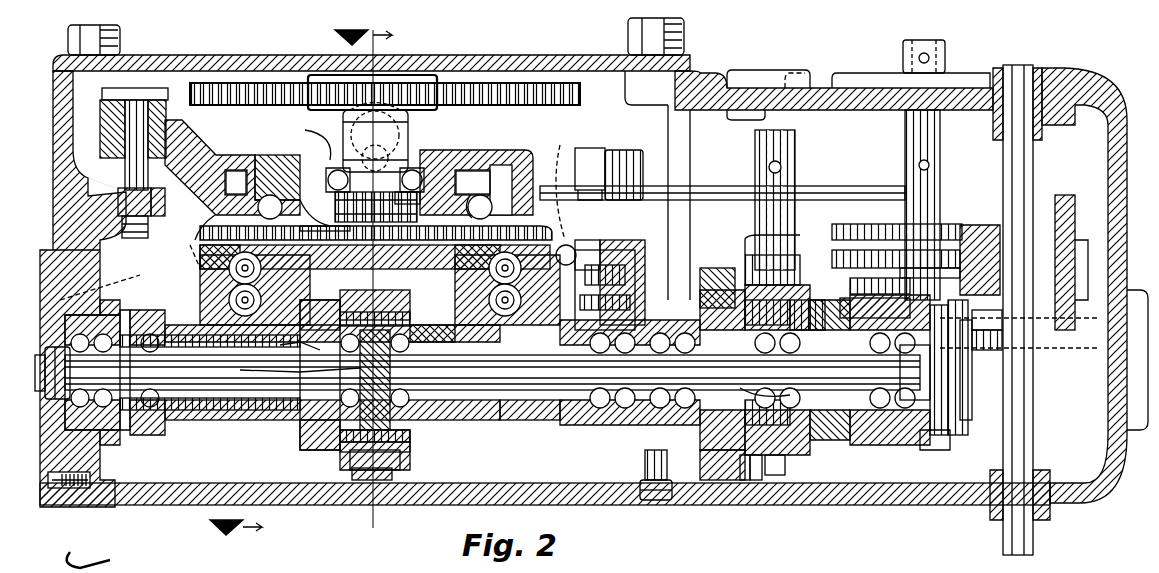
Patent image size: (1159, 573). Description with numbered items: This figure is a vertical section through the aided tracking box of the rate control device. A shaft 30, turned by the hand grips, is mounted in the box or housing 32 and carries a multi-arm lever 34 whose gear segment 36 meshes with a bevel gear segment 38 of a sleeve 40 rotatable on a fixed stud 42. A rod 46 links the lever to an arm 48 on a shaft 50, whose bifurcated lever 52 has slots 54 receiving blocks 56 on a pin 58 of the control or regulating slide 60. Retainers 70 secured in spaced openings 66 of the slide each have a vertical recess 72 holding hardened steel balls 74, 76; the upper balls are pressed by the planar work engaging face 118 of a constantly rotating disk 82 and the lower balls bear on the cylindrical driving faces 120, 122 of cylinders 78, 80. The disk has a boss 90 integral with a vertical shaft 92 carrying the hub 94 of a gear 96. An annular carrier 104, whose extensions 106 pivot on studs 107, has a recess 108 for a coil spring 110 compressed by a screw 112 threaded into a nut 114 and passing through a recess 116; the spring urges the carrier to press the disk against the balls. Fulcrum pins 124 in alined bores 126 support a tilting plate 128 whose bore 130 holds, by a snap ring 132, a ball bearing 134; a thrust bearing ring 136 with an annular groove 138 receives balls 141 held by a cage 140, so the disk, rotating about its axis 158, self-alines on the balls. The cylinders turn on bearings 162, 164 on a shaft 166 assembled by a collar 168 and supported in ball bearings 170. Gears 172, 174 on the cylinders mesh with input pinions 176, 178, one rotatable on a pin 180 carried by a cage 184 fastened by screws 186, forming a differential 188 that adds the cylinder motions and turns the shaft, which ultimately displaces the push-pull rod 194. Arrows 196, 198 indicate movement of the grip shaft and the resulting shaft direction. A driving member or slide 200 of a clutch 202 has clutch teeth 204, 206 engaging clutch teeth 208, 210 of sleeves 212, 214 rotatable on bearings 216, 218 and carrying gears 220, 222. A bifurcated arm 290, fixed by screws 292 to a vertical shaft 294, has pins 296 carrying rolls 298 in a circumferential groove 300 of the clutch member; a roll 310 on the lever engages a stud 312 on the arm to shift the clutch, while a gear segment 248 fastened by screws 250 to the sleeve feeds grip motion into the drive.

The shaft 30 is at (905, 152).
The box or housing 32 is at (1075, 100).
The multi-arm lever 34 is at (945, 230).
The gear segment 36 is at (975, 250).
The bevel gear segment 38 is at (960, 363).
The sleeve 40 is at (985, 352).
The fixed stud 42 is at (995, 335).
The rod 46 is at (845, 186).
The arm 48 is at (635, 155).
The shaft 50 is at (558, 186).
The bifurcated lever 52 is at (610, 275).
The slots 54 is at (600, 250).
The blocks 56 is at (578, 250).
The pin 58 is at (585, 300).
The control or regulating slide 60 is at (375, 256).
The spaced openings 66 is at (315, 236).
The retainers 70 is at (465, 258).
The vertical recess 72 is at (250, 316).
The balls 74 is at (195, 260).
The balls 76 is at (490, 318).
The cylinder 78 is at (215, 420).
The cylinder 80 is at (498, 425).
The disk 82 is at (190, 245).
The boss 90 is at (360, 215).
The vertical shaft 92 is at (405, 135).
The hub 94 is at (410, 118).
The gear 96 is at (248, 96).
The carrier 104 is at (232, 165).
The extensions 106 is at (492, 210).
The studs 107 is at (585, 190).
The recess 108 is at (110, 118).
The coil spring 110 is at (166, 122).
The screw 112 is at (152, 88).
The nut 114 is at (130, 232).
The recess 116 is at (108, 192).
The work engaging face 118 is at (376, 230).
The cylindrical driving face 120 is at (296, 436).
The cylindrical driving face 122 is at (552, 430).
The fulcrum pins 124 is at (311, 142).
The alined bores 126 is at (360, 235).
The tilting plate 128 is at (270, 155).
The bore 130 is at (412, 162).
The snap ring 132 is at (305, 210).
The ball bearing 134 is at (335, 168).
The thrust bearing ring 136 is at (374, 182).
The annular groove 138 is at (258, 207).
The cage 140 is at (220, 213).
The balls 141 is at (200, 230).
The axis of rotation 158 is at (380, 44).
The bearings 162 is at (150, 408).
The bearings 164 is at (475, 420).
The shaft 166 is at (265, 380).
The collar 168 is at (300, 342).
The ball bearings 170 is at (105, 430).
The gear 172 is at (345, 438).
The gear 174 is at (408, 442).
The input pinion 176 is at (348, 462).
The input pinion 178 is at (405, 300).
The pin 180 is at (340, 305).
The cage 184 is at (410, 466).
The screws 186 is at (432, 337).
The differential 188 is at (380, 490).
The push-pull rod 194 is at (1030, 400).
The arrow 196 is at (906, 50).
The arrow 198 is at (210, 374).
The driving member or slide 200 is at (835, 440).
The clutch 202 is at (774, 488).
The clutch teeth 204 is at (758, 470).
The clutch teeth 206 is at (830, 308).
The clutch teeth 208 is at (745, 470).
The clutch teeth 210 is at (850, 445).
The sleeve 212 is at (725, 452).
The sleeve 214 is at (935, 440).
The bearings 216 is at (690, 470).
The bearings 218 is at (905, 440).
The gear 220 is at (712, 268).
The gear 222 is at (880, 286).
The gear segment 248 is at (1062, 200).
The screws 250 is at (1085, 265).
The bifurcated arm 290 is at (775, 285).
The screws 292 is at (782, 167).
The vertical shaft 294 is at (795, 75).
The pins 296 is at (800, 265).
The rolls 298 is at (768, 395).
The circumferential groove 300 is at (830, 320).
The roll 310 is at (860, 275).
The stud 312 is at (800, 268).